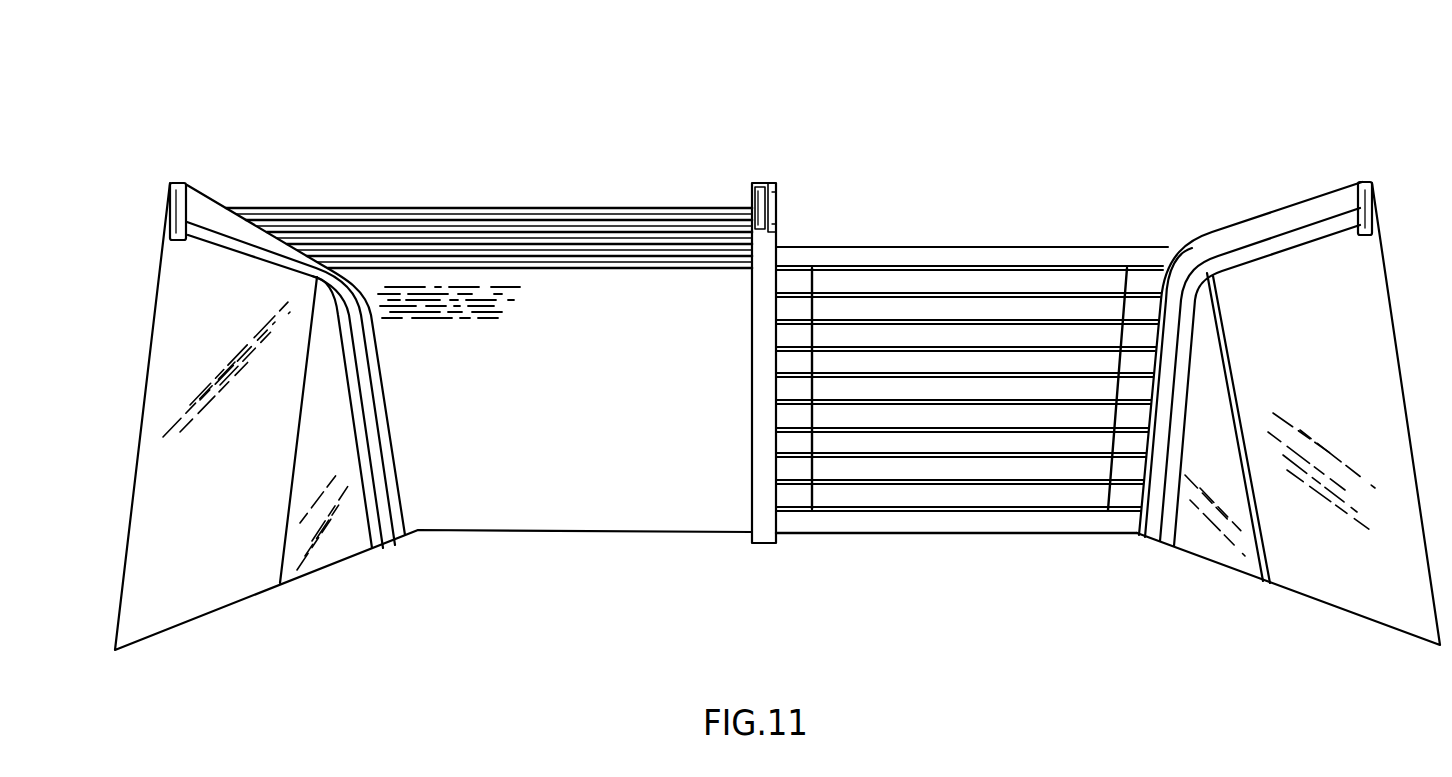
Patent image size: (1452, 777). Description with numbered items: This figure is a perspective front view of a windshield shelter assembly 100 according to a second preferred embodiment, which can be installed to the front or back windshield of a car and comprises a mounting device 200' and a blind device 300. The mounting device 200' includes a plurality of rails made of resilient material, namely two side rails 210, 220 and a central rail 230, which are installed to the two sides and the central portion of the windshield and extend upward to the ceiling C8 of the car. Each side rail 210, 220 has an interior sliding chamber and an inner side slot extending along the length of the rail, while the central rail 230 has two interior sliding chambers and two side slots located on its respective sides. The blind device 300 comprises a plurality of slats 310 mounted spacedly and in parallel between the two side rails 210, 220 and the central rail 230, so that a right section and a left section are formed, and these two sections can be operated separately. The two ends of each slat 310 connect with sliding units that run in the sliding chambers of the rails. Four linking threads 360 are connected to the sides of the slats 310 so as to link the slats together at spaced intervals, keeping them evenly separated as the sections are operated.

The windshield shelter assembly 100 is at (1266, 386).
The mounting device 200' is at (1238, 163).
The side rail 210 is at (369, 487).
The side rail 220 is at (1194, 478).
The central rail 230 is at (740, 494).
The blind device 300 is at (546, 292).
The slat 310 is at (972, 436).
The linking thread 360 is at (814, 282).
The ceiling C8 is at (1000, 177).